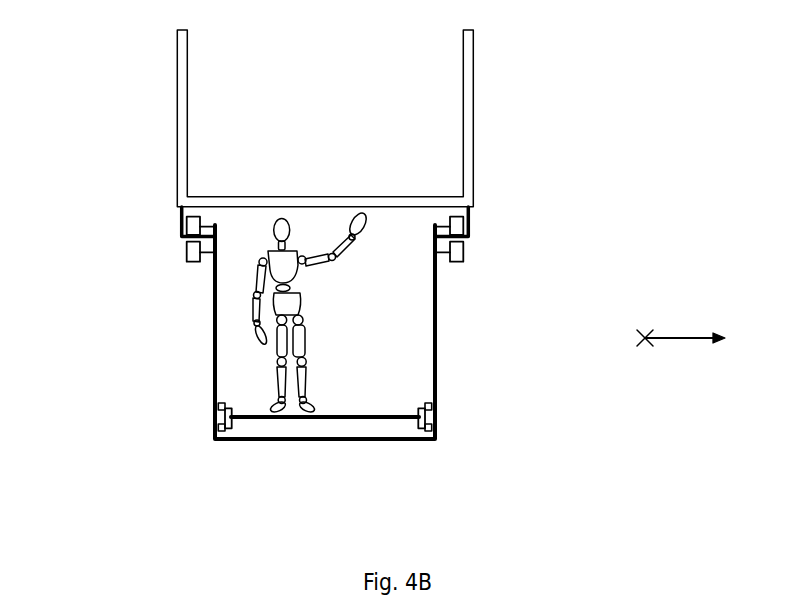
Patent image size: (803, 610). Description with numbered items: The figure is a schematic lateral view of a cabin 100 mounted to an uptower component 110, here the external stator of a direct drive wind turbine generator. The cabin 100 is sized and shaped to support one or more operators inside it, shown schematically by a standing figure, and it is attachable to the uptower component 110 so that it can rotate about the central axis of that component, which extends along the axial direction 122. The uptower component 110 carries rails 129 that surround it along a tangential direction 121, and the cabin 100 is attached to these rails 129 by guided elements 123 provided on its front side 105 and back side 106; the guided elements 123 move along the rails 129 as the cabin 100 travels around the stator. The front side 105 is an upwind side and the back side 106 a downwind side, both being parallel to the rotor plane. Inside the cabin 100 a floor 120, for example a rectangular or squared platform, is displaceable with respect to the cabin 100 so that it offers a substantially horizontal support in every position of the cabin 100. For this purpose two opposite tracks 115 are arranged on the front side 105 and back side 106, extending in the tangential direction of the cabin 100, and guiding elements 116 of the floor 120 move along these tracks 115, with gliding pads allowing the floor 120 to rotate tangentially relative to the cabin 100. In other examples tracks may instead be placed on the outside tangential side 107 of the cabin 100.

The cabin 100 is at (437, 343).
The front side 105 is at (213, 308).
The back side 106 is at (437, 307).
The outside tangential side 107 is at (277, 442).
The uptower component 110 is at (472, 115).
The track 115 is at (216, 407).
The guiding element 116 is at (230, 398).
The floor 120 is at (373, 420).
The tangential direction 121 is at (648, 349).
The axial direction 122 is at (680, 337).
The guided element 123 is at (177, 252).
The rail 129 is at (178, 220).